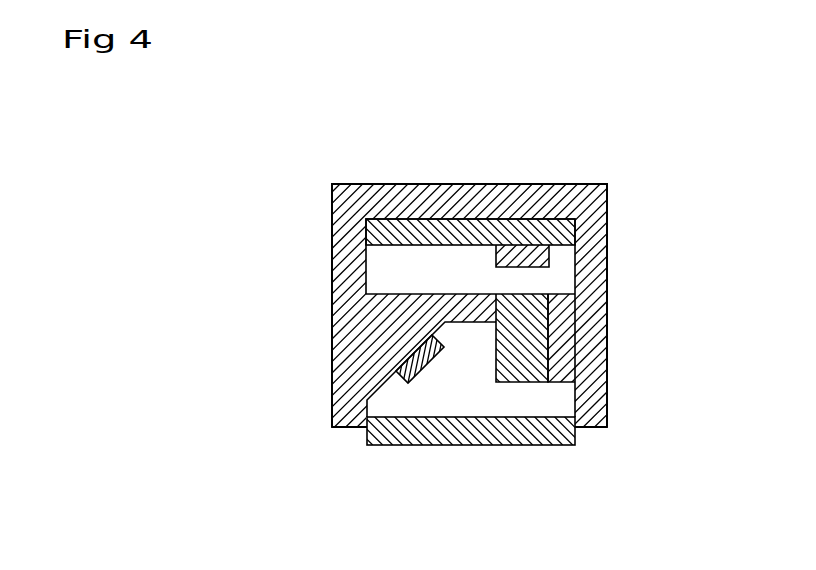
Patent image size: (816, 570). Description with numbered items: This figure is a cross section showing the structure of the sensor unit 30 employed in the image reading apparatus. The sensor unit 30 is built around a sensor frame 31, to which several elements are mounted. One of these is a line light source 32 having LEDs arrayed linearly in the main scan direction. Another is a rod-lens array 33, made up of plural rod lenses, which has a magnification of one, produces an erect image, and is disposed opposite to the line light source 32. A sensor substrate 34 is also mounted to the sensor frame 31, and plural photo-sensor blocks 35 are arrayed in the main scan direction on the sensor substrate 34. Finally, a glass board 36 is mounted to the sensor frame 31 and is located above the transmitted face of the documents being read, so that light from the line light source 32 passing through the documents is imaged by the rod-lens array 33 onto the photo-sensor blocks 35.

The sensor unit 30 is at (525, 163).
The sensor frame 31 is at (608, 193).
The line light source 32 is at (420, 353).
The rod-lens array 33 is at (547, 337).
The sensor substrate 34 is at (387, 230).
The photo-sensor blocks 35 is at (545, 257).
The glass board 36 is at (535, 437).